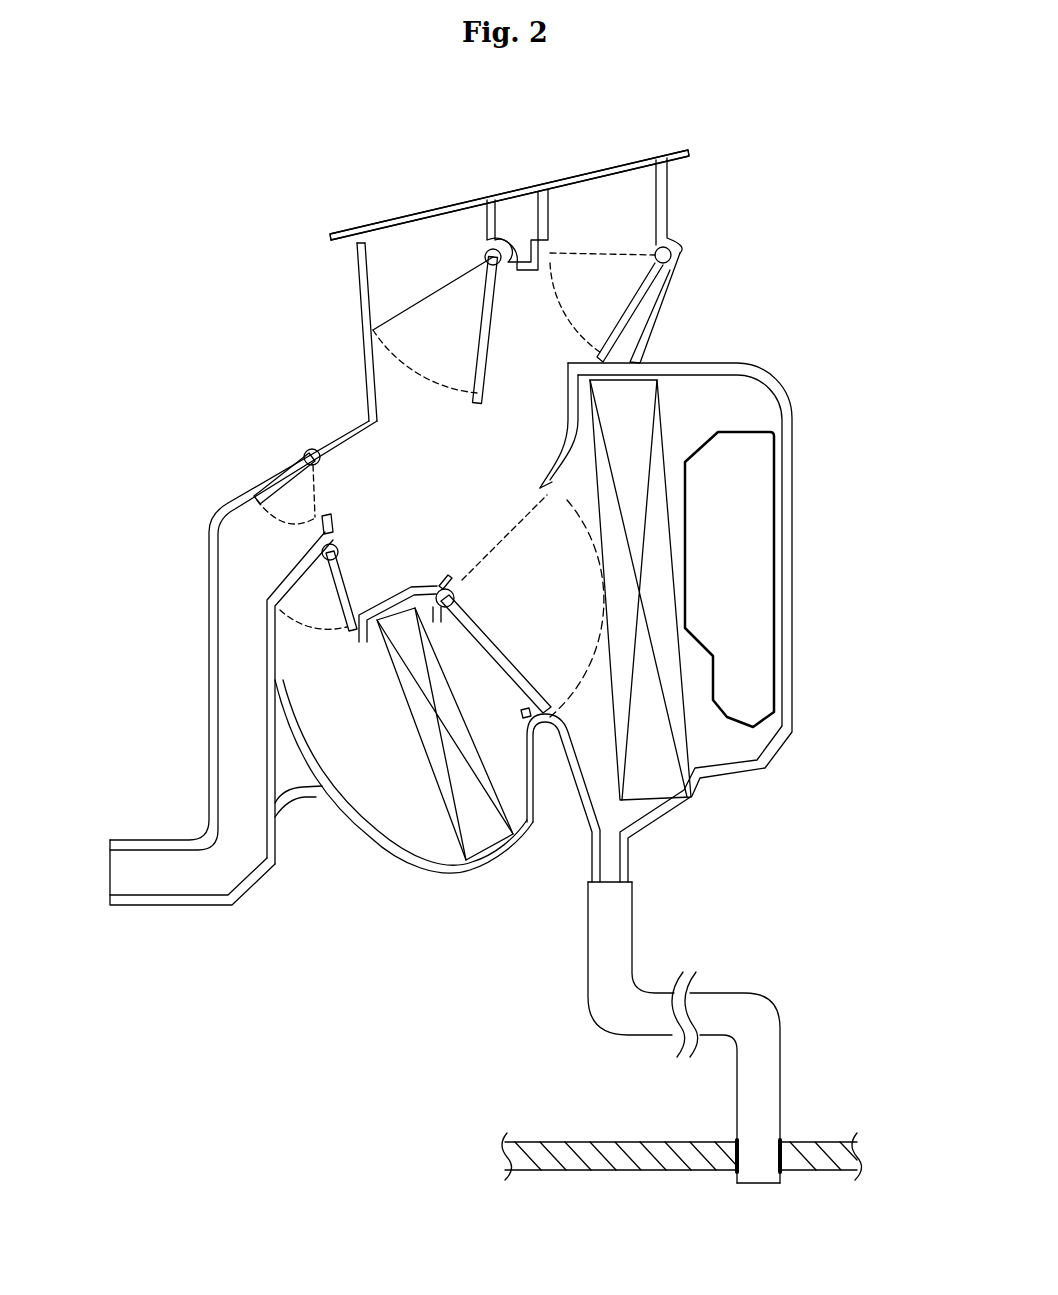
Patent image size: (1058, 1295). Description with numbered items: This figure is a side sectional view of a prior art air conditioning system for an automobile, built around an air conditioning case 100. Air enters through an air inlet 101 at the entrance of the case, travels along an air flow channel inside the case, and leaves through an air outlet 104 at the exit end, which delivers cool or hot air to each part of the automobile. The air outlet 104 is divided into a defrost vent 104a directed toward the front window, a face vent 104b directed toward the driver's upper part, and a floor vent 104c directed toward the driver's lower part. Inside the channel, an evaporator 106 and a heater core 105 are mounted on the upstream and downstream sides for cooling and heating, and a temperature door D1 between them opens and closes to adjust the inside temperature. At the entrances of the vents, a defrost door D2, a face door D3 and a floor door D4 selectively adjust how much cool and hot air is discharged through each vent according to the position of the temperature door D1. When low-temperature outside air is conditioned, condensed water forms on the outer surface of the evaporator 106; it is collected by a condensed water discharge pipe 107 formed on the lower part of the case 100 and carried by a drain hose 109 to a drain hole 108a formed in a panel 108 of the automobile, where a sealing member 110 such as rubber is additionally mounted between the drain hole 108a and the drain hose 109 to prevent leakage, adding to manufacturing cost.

The air conditioning case 100 is at (286, 298).
The air inlet 101 is at (740, 597).
The air outlet 104 is at (139, 1066).
The defrost vent 104a is at (602, 187).
The face vent 104b is at (413, 227).
The floor vent 104c is at (135, 872).
The heater core 105 is at (478, 828).
The evaporator 106 is at (655, 773).
The condensed water discharge pipe 107 is at (582, 877).
The panel 108 is at (540, 1140).
The drain hole 108a is at (738, 1173).
The drain hose 109 is at (767, 1030).
The sealing member 110 is at (783, 1133).
The temperature door D1 is at (493, 660).
The defrost door D2 is at (633, 316).
The face door D3 is at (477, 338).
The floor door D4 is at (280, 477).